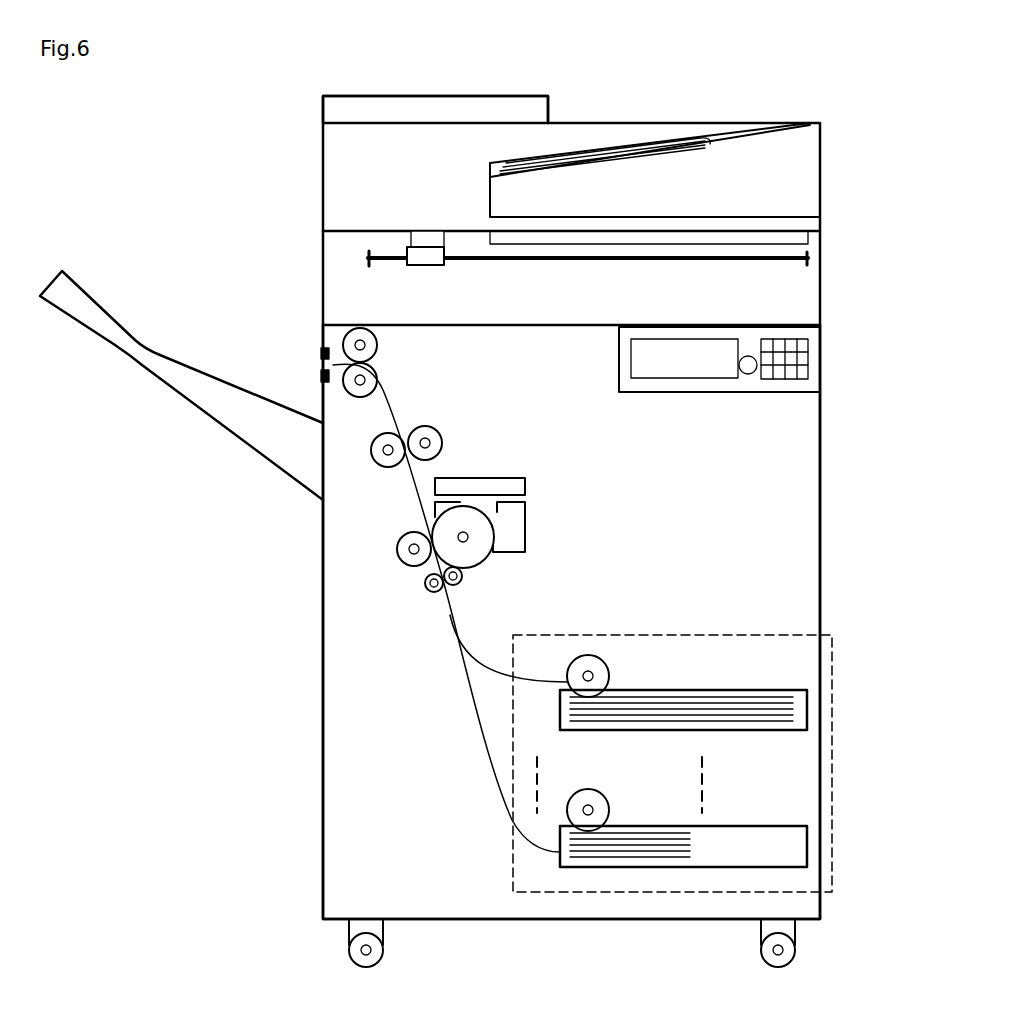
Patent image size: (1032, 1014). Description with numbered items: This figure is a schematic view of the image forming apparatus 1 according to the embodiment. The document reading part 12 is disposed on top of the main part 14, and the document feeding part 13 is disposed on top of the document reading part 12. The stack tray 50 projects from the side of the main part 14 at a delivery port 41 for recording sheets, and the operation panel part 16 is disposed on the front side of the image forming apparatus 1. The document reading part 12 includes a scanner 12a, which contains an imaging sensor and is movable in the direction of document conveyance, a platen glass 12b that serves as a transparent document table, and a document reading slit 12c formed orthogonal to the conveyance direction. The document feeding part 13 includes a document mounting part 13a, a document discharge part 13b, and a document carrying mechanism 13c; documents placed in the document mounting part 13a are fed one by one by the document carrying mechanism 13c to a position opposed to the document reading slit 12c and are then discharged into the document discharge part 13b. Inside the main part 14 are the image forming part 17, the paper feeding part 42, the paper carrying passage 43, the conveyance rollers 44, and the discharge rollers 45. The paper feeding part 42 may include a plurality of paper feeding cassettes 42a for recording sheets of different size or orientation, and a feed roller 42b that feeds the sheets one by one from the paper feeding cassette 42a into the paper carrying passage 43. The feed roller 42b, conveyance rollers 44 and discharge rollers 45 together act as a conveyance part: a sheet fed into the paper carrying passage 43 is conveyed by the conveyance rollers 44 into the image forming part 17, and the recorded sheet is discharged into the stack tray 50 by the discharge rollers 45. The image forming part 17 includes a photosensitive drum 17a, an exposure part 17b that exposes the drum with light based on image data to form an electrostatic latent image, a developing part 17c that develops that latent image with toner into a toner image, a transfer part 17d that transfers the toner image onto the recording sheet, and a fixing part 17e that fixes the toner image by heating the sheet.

The image forming apparatus 1 is at (257, 133).
The document reading part 12 is at (563, 233).
The scanner 12a is at (430, 267).
The platen glass 12b is at (800, 240).
The document reading slit 12c is at (431, 235).
The document feeding part 13 is at (524, 126).
The document mounting part 13a is at (716, 140).
The document discharge part 13b is at (682, 217).
The document carrying mechanism 13c is at (438, 102).
The main part 14 is at (820, 594).
The operation panel part 16 is at (815, 378).
The image forming part 17 is at (622, 503).
The photosensitive drum 17a is at (480, 566).
The exposure part 17b is at (527, 483).
The developing part 17c is at (527, 518).
The transfer part 17d is at (397, 547).
The fixing part 17e is at (443, 438).
The delivery port 41 is at (320, 364).
The paper feeding part 42 is at (833, 693).
The paper feeding cassette 42a is at (733, 689).
The feed roller 42b is at (610, 678).
The paper carrying passage 43 is at (443, 597).
The conveyance rollers 44 is at (425, 582).
The discharge rollers 45 is at (377, 345).
The stack tray 50 is at (210, 412).